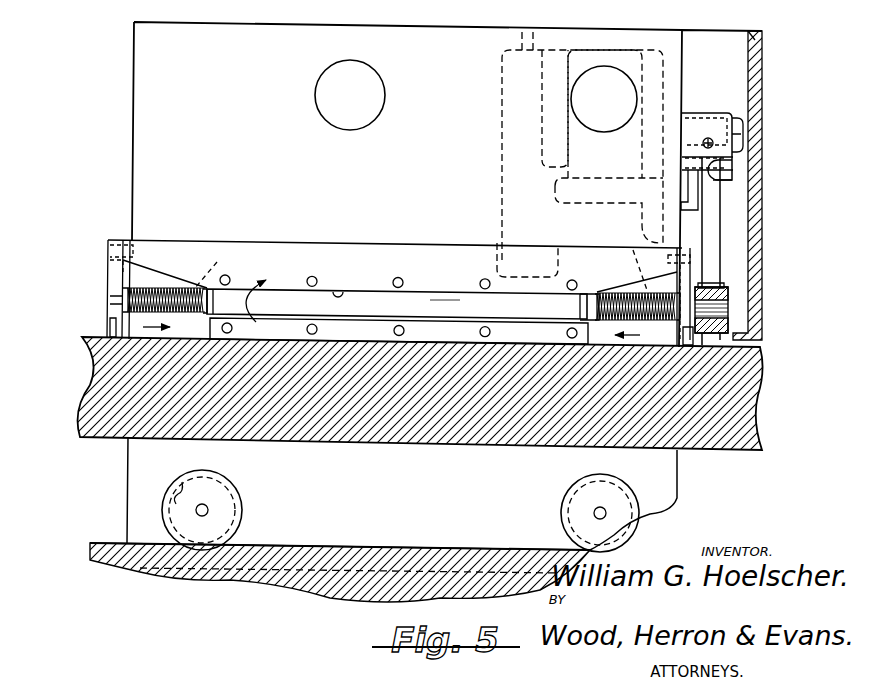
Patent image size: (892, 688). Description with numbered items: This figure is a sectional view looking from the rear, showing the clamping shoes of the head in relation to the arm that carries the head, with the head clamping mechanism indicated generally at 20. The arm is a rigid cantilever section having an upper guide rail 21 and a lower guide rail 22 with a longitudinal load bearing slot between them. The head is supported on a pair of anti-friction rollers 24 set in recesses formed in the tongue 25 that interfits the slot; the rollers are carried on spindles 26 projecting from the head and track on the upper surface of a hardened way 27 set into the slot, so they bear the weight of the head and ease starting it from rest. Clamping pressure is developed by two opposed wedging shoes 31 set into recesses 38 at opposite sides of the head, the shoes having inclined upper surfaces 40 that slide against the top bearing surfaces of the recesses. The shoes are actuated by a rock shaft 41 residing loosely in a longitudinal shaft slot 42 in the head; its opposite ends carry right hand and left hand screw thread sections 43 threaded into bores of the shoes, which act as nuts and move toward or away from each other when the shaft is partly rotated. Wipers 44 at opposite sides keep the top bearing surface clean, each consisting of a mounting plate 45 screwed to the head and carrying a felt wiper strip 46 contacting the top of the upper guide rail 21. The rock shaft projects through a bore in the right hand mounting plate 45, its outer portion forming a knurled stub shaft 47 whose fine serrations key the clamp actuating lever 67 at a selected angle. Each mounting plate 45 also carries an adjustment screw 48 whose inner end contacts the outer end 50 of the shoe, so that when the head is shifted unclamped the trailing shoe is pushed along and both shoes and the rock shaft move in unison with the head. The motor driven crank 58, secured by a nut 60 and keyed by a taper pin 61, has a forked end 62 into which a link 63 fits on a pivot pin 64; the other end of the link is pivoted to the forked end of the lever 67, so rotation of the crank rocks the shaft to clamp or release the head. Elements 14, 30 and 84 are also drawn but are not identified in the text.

The frame 14 is at (132, 121).
The head clamping mechanism 20 is at (361, 302).
The upper guide rail 21 is at (88, 386).
The lower guide rail 22 is at (258, 580).
The anti-friction rollers 24 is at (180, 490).
The tongue 25 is at (146, 456).
The spindles 26 is at (210, 511).
The hardened way 27 is at (143, 588).
The holes 30 is at (314, 276).
The wedging shoes 31 is at (160, 287).
The recesses 38 is at (140, 270).
The inclined upper surfaces 40 is at (186, 288).
The rock shaft 41 is at (448, 306).
The shaft slot 42 is at (340, 290).
The screw thread sections 43 is at (421, 259).
The wipers 44 is at (107, 285).
The mounting plate 45 is at (116, 300).
The wiper strip 46 is at (110, 326).
The knurled stub shaft 47 is at (729, 310).
The adjustment screw 48 is at (110, 249).
The outer end of clamping shoe 50 is at (656, 335).
The crank 58 is at (712, 112).
The nut 60 is at (744, 138).
The taper pin 61 is at (706, 141).
The forked end 62 is at (715, 183).
The link 63 is at (706, 205).
The pivot pin 64 is at (734, 166).
The clamp actuating lever 67 is at (726, 288).
The slot 84 is at (682, 191).